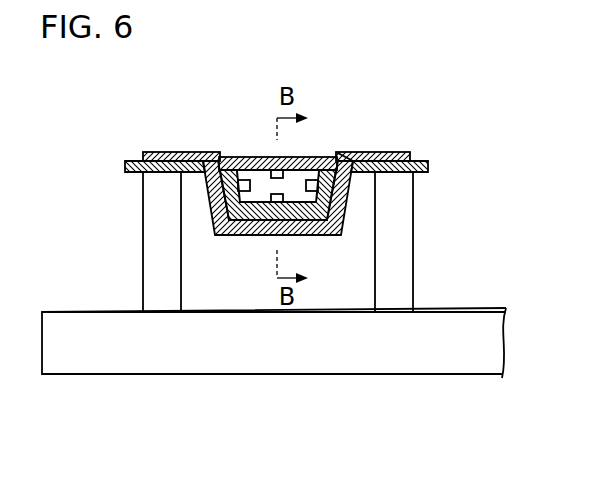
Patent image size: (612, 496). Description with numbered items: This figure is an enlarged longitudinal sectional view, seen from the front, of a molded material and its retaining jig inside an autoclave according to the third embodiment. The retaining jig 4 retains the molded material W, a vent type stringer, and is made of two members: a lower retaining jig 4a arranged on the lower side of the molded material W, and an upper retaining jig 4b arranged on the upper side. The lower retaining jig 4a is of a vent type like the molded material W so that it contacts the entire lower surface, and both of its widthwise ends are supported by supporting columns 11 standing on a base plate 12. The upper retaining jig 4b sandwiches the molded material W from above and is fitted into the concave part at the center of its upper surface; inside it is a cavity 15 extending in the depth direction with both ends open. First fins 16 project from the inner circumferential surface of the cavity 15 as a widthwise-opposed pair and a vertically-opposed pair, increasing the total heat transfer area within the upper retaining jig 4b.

The retaining jig 4 is at (276, 319).
The lower retaining jig 4a is at (327, 236).
The upper retaining jig 4b is at (308, 236).
The supporting column 11 is at (143, 248).
The base plate 12 is at (433, 360).
The cavity 15 is at (263, 180).
The first fins 16 is at (278, 168).
The molded material W is at (352, 152).